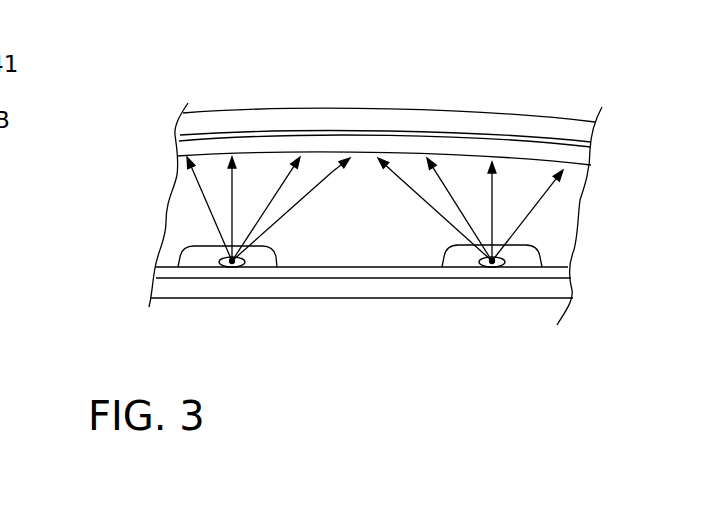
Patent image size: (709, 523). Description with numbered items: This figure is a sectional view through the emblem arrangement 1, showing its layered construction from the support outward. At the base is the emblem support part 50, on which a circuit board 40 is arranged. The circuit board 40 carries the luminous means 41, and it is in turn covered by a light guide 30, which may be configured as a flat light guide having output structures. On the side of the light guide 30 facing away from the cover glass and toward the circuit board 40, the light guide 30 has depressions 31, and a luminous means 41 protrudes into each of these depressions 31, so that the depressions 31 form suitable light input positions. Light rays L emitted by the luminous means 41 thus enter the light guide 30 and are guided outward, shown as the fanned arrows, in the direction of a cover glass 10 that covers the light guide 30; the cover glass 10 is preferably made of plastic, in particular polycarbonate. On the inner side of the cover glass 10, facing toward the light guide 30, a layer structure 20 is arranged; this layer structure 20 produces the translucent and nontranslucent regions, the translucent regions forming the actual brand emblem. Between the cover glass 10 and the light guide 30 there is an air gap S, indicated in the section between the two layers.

The emblem arrangement 1 is at (607, 69).
The cover glass 10 is at (575, 132).
The layer structure 20 is at (567, 146).
The light guide 30 is at (570, 213).
The depressions 31 is at (190, 250).
The circuit board 40 is at (559, 272).
The luminous means 41 is at (232, 267).
The emblem support part 50 is at (560, 290).
The light rays L is at (393, 172).
The air gap S is at (510, 146).